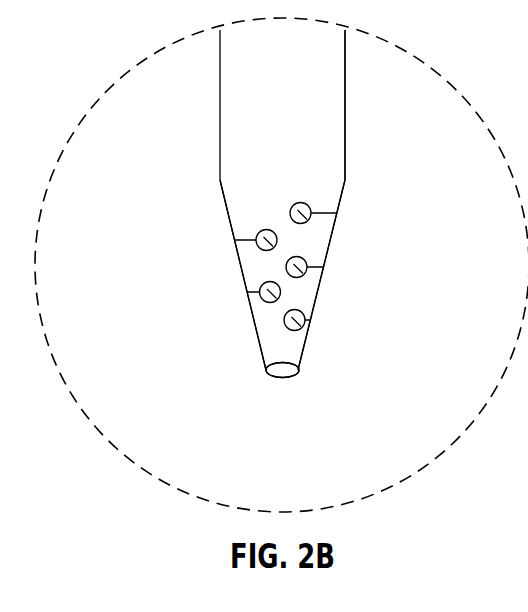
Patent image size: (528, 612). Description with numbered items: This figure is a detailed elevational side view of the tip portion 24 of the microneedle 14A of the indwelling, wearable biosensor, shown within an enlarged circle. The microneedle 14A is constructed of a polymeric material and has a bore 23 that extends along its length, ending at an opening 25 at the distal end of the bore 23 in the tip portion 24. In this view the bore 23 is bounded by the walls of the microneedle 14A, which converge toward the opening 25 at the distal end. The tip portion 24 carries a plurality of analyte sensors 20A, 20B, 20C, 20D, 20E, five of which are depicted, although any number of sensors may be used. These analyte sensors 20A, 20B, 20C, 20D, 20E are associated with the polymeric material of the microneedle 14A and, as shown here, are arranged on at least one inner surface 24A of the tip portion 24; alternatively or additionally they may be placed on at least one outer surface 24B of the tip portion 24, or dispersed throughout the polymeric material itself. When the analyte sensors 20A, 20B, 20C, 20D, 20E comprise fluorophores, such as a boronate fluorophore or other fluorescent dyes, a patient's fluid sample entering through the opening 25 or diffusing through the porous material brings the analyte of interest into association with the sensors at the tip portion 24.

The microneedle 14A is at (220, 76).
The bore 23 is at (319, 117).
The tip portion 24 is at (219, 352).
The inner surface 24A is at (323, 253).
The outer surface 24B is at (228, 211).
The analyte sensor 20A is at (308, 221).
The analyte sensor 20B is at (259, 248).
The analyte sensor 20C is at (304, 274).
The analyte sensor 20D is at (263, 299).
The analyte sensor 20E is at (302, 328).
The opening 25 is at (283, 373).